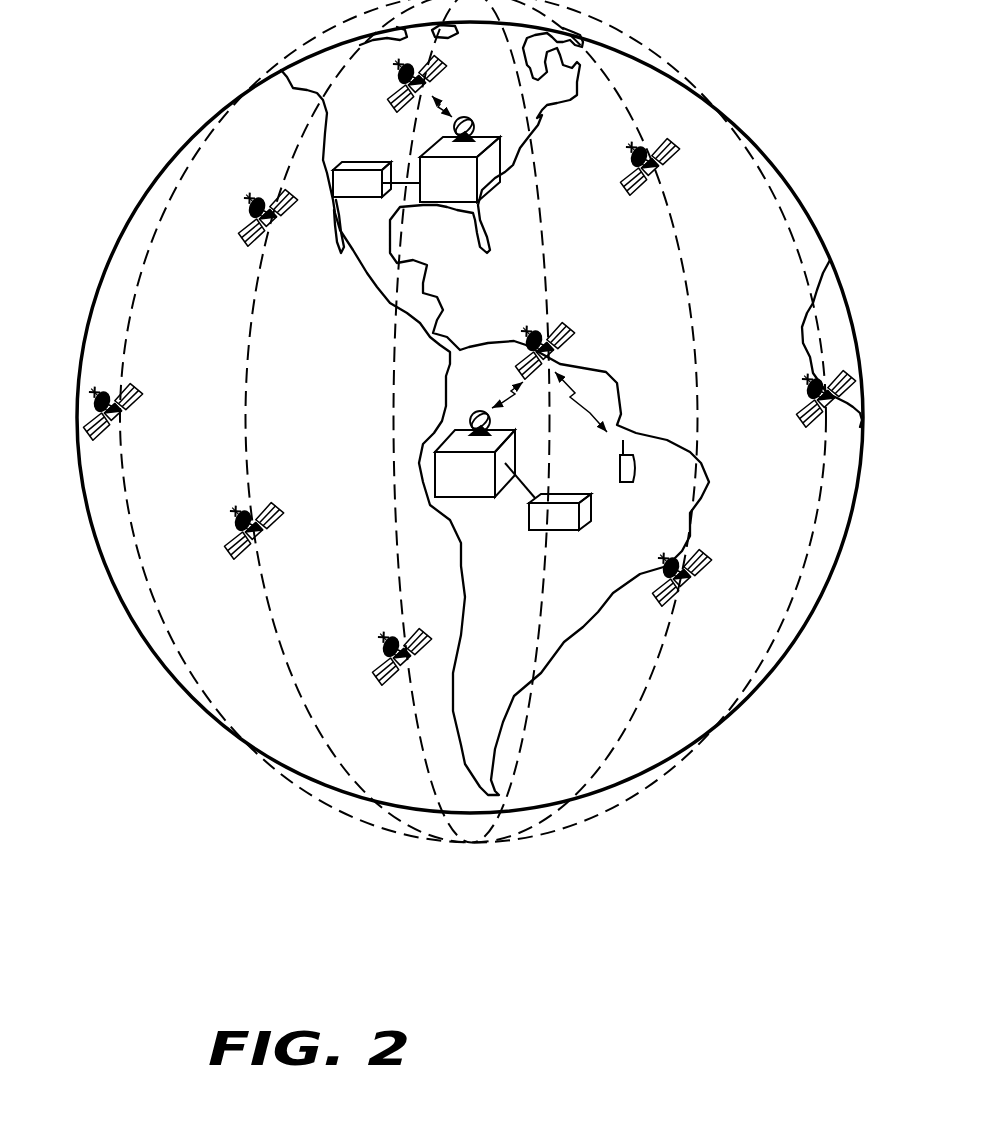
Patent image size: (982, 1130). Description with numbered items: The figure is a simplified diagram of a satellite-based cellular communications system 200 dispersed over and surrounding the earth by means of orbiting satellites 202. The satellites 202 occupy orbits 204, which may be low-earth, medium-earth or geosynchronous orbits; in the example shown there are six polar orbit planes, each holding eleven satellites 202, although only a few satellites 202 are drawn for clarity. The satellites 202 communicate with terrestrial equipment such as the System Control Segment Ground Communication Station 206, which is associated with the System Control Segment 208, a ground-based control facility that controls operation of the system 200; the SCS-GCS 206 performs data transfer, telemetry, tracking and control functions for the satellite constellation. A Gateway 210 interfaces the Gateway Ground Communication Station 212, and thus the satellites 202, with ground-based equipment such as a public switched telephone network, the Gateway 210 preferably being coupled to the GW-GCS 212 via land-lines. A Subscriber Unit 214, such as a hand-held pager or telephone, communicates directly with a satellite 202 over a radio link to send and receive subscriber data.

The satellite-based cellular communications system 200 is at (467, 940).
The satellites 202 is at (400, 87).
The orbits 204 is at (291, 167).
The System Control Segment Ground Communication Station 206 is at (463, 118).
The System Control Segment 208 is at (365, 168).
The Gateway 210 is at (563, 532).
The Gateway Ground Communication Station 212 is at (465, 500).
The Subscriber Unit 214 is at (628, 485).